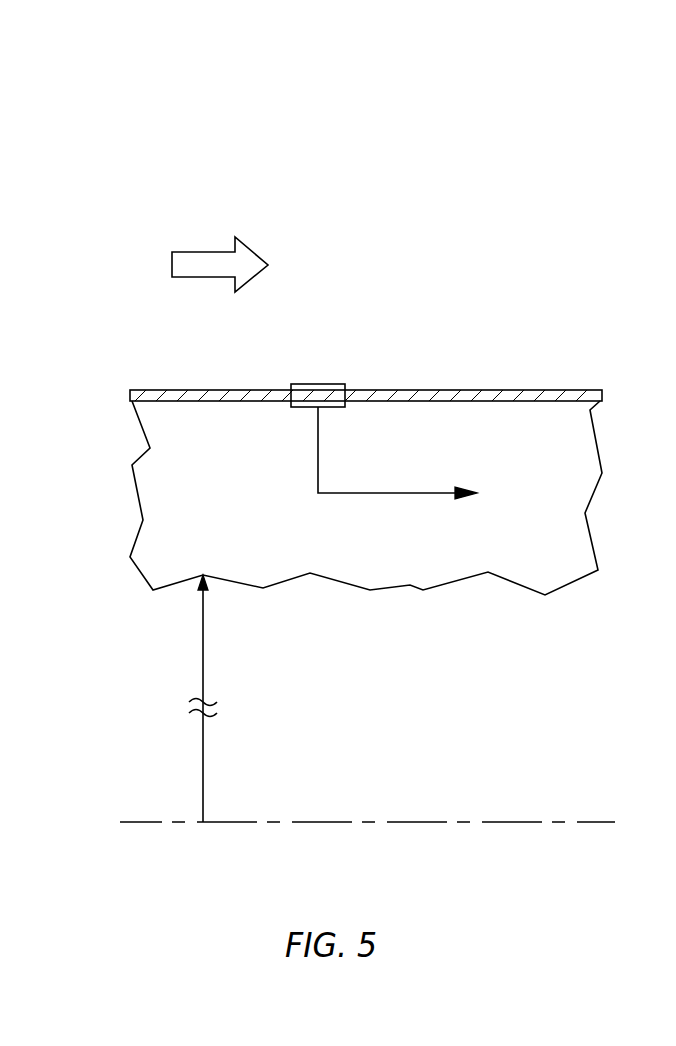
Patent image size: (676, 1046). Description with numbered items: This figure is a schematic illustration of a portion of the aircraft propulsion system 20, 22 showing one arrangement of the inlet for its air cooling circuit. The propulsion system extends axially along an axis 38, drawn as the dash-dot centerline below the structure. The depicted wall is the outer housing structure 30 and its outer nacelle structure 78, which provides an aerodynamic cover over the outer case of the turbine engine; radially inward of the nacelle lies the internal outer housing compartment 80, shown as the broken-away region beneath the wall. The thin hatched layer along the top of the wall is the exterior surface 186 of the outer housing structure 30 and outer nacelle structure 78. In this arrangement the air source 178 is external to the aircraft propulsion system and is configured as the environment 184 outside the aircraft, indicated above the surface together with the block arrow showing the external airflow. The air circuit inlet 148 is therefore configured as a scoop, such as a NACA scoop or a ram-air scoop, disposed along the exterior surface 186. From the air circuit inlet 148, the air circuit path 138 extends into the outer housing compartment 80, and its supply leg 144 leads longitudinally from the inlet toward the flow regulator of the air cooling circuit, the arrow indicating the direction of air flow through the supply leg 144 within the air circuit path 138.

The gas turbine engine 20 is at (128, 230).
The aircraft propulsion system 22 is at (87, 172).
The outer housing structure 30 is at (544, 378).
The outer nacelle structure 78 is at (577, 305).
The axis 38 is at (133, 825).
The outer housing compartment 80 is at (233, 496).
The exterior surface 186 is at (203, 390).
The air circuit inlet 148 is at (317, 385).
The air circuit path 138 is at (385, 505).
The supply leg 144 is at (417, 492).
The air source 178 is at (418, 304).
The environment 184 is at (465, 304).